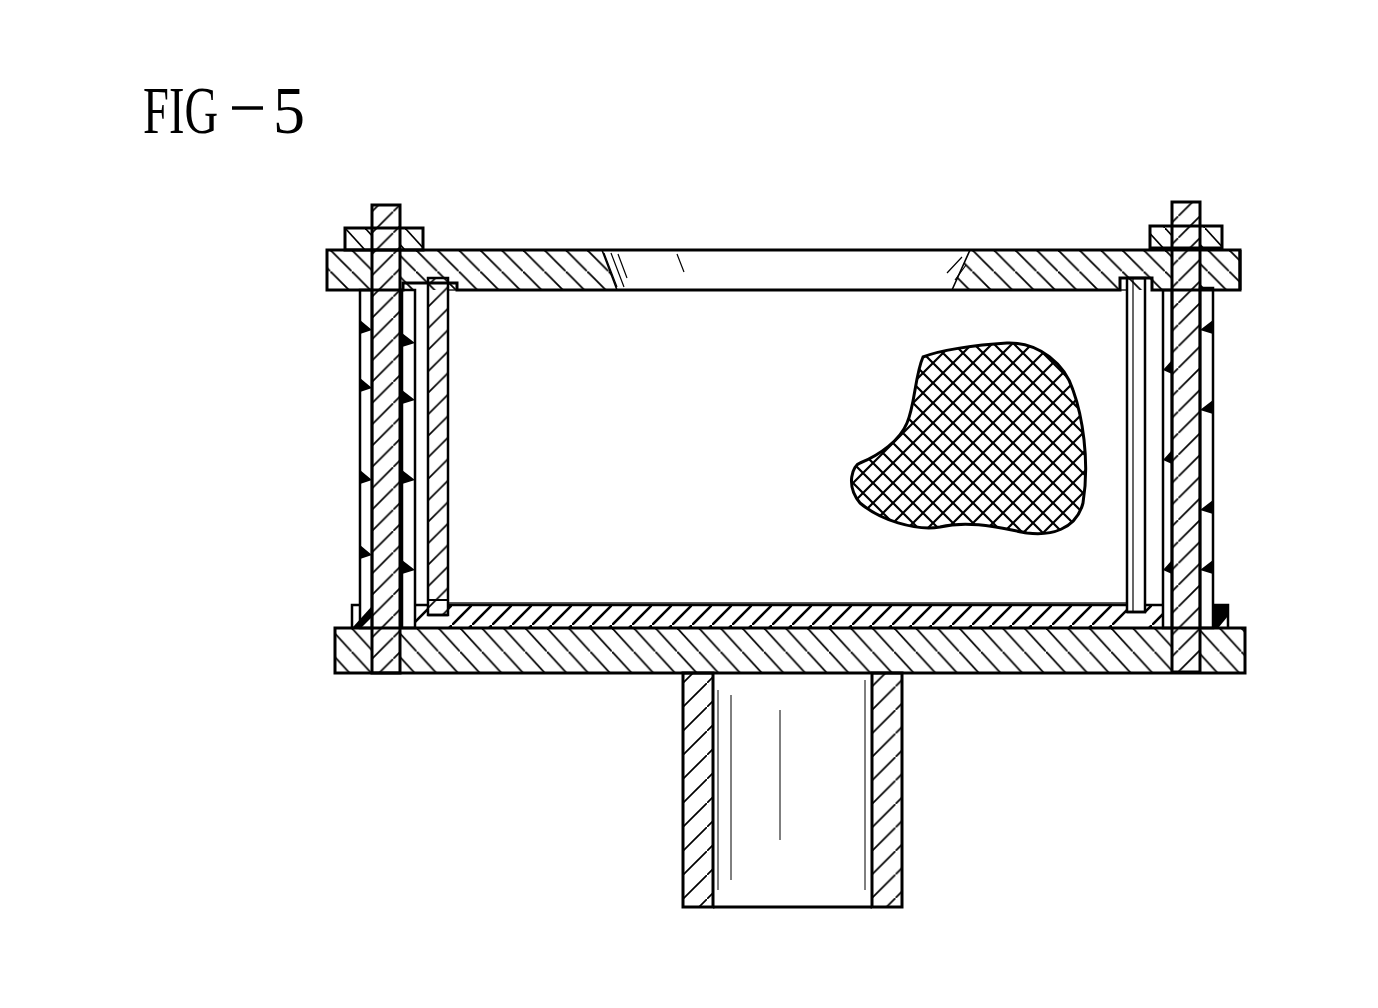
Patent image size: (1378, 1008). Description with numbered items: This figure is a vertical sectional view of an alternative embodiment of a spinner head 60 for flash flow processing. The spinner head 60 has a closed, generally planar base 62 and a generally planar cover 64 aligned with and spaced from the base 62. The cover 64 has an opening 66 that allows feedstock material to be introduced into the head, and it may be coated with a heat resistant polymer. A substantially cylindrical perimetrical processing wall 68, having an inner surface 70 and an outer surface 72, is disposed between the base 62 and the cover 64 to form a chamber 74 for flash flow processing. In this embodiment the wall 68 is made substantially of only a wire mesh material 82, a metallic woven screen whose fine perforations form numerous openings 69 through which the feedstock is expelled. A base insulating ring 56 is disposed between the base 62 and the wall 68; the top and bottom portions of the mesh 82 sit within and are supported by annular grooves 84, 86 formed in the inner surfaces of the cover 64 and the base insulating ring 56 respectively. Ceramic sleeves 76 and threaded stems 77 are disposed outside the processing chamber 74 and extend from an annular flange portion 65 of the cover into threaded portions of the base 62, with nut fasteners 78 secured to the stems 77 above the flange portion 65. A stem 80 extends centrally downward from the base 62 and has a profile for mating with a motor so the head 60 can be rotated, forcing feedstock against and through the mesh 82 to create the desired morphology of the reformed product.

The spinner head 60 is at (797, 200).
The cover 64 is at (509, 250).
The opening 66 is at (710, 268).
The nut fasteners 78 is at (343, 240).
The outer surface 72 is at (385, 655).
The annular groove 86 is at (1152, 623).
The ceramic sleeves 76 is at (362, 522).
The threaded stems 77 is at (387, 445).
The chamber 74 is at (485, 357).
The annular groove 84 is at (1130, 285).
The inner surface 70 is at (450, 572).
The base insulating ring 56 is at (353, 614).
The base 62 is at (1227, 672).
The perimetrical processing wall 68 is at (983, 567).
The annular flange portion 65 is at (1240, 268).
The stem 80 is at (905, 800).
The wire mesh material 82 is at (924, 355).
The openings 69 is at (1053, 420).